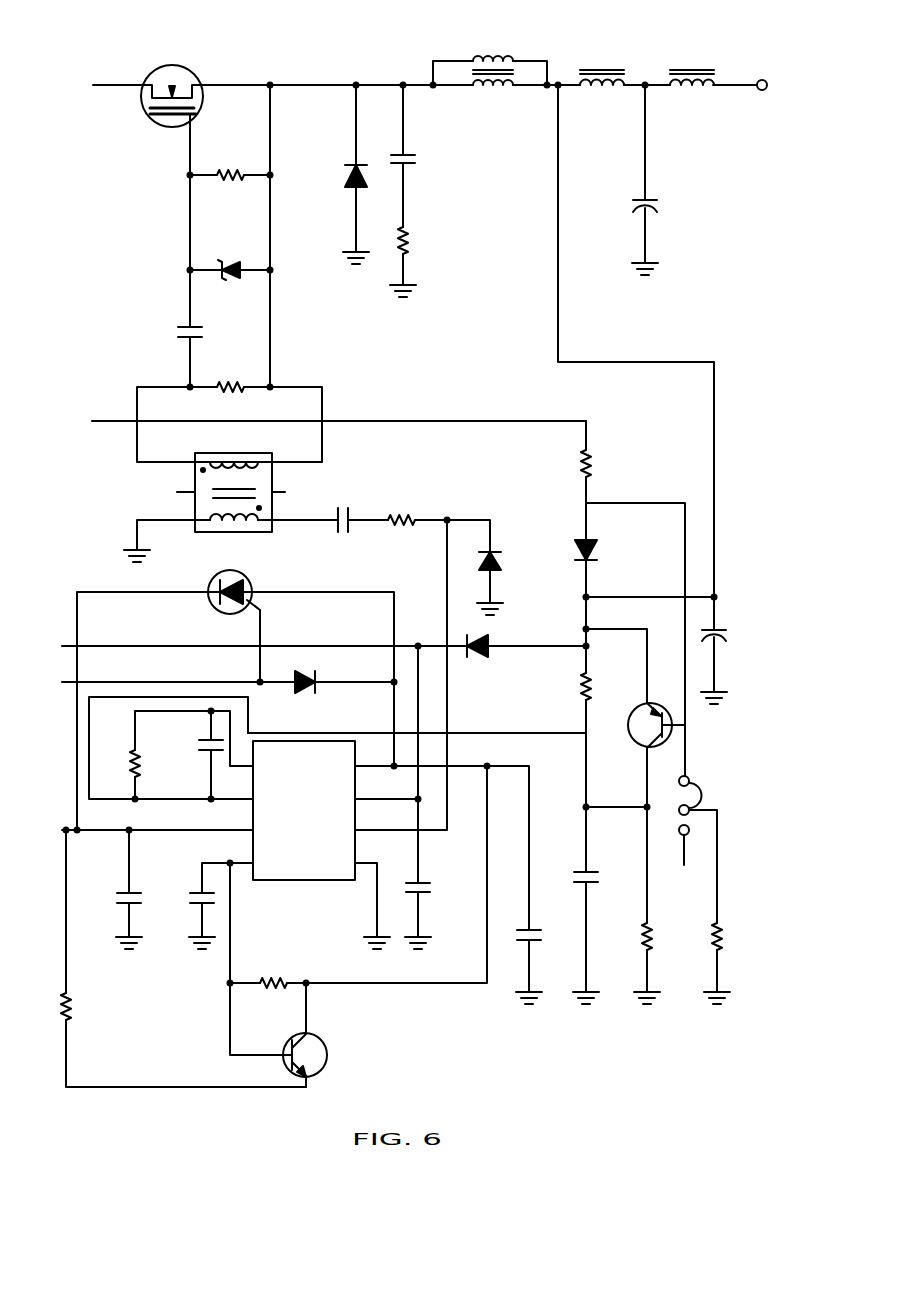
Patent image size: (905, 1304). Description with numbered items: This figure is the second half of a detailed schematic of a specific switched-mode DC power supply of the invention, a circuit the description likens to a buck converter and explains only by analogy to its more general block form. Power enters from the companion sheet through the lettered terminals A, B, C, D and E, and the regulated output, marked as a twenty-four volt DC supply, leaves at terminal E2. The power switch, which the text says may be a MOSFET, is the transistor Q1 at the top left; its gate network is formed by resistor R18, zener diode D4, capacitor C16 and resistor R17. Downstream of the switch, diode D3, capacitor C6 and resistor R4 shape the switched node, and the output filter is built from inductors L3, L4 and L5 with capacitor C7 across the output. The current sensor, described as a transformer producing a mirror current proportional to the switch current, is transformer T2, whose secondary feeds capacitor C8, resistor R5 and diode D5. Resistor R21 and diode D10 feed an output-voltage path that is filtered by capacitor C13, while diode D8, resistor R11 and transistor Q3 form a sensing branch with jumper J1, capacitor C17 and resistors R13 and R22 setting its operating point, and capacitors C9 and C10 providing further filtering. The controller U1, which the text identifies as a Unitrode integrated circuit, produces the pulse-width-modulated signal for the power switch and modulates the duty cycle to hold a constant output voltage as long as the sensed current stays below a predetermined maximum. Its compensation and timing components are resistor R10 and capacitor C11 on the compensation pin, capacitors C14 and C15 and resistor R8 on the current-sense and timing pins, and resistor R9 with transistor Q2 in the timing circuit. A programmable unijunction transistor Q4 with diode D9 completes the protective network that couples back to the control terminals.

The terminal A is at (103, 85).
The terminal B is at (324, 421).
The terminal C is at (249, 646).
The terminal D is at (163, 682).
The terminal E is at (142, 830).
The 24V DC output terminal E2 is at (742, 117).
The MOSFET IRF840 Q1 is at (196, 192).
The resistor 10K R18 is at (230, 177).
The zener diode 1N4740 D4 is at (230, 273).
The capacitor .22uF C16 is at (166, 351).
The resistor 1K R17 is at (230, 387).
The diode MUR1550 D3 is at (329, 173).
The capacitor .001uF C6 is at (432, 155).
The resistor 10 ohm R4 is at (412, 261).
The inductor 40T 18GA L3 is at (410, 77).
The inductor 27T 16GA L4 is at (596, 78).
The inductor 20T 20GA L5 is at (700, 78).
The capacitor 1000uF 35V C7 is at (672, 180).
The transformer T2 is at (209, 497).
The capacitor 1uF C8 is at (330, 524).
The resistor 18 ohm R5 is at (419, 525).
The diode 1N5818 D5 is at (509, 567).
The resistor 470K R21 is at (608, 462).
The diode 1N914 D10 is at (614, 552).
The capacitor 1000uF 35V C13 is at (739, 650).
The diode 1N4004 D8 is at (521, 673).
The resistor 22.1K R11 is at (564, 702).
The transistor 2N3905 Q3 is at (634, 757).
The jumper J1 is at (688, 838).
The capacitor 470pF C17 is at (609, 905).
The resistor 2.55K R13 is at (666, 905).
The resistor 150K R22 is at (737, 961).
The capacitor .01uF C9 is at (471, 884).
The capacitor 100uF 35V C10 is at (440, 797).
The programmable unijunction transistor 2N6027 Q4 is at (237, 699).
The diode 1N914 D9 is at (344, 700).
The resistor 750K R10 is at (116, 757).
The capacitor 0.002uF C11 is at (186, 755).
The PWM controller UC1842J U1 is at (329, 845).
The capacitor 470pF C14 is at (107, 889).
The capacitor .01uF C15 is at (201, 905).
The resistor 7.5K R8 is at (183, 958).
The resistor 8.8K R9 is at (357, 910).
The transistor 2N3904 Q2 is at (338, 1035).